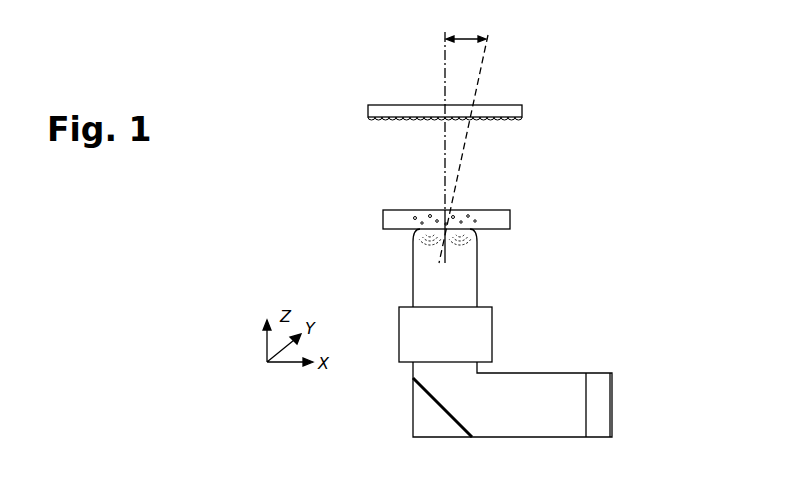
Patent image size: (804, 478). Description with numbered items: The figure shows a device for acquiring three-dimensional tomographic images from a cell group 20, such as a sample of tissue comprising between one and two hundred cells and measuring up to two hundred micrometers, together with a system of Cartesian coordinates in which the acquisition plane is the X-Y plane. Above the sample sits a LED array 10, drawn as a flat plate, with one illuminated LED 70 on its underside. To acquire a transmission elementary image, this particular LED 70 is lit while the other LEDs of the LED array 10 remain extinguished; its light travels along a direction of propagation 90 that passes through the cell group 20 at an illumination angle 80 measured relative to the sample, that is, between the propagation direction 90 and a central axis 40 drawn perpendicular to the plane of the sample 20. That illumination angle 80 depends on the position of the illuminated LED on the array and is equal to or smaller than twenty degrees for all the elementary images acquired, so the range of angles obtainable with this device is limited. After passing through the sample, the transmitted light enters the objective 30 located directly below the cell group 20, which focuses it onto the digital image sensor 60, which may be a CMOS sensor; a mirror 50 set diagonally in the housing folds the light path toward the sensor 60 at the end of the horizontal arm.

The LED array 10 is at (368, 110).
The cell group 20 is at (383, 221).
The objective 30 is at (413, 260).
The central axis 40 is at (444, 54).
The mirror 50 is at (435, 403).
The digital image sensor 60 is at (612, 390).
The illuminated LED 70 is at (477, 125).
The illumination angle 80 is at (463, 50).
The direction of propagation 90 is at (487, 56).